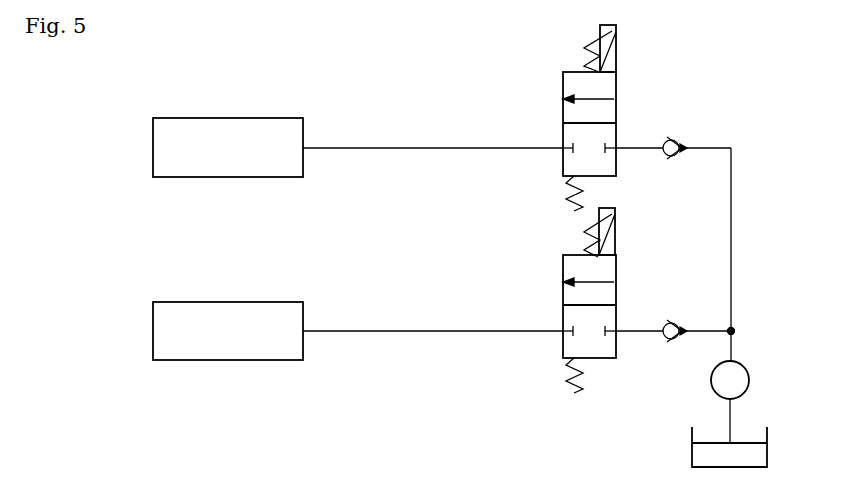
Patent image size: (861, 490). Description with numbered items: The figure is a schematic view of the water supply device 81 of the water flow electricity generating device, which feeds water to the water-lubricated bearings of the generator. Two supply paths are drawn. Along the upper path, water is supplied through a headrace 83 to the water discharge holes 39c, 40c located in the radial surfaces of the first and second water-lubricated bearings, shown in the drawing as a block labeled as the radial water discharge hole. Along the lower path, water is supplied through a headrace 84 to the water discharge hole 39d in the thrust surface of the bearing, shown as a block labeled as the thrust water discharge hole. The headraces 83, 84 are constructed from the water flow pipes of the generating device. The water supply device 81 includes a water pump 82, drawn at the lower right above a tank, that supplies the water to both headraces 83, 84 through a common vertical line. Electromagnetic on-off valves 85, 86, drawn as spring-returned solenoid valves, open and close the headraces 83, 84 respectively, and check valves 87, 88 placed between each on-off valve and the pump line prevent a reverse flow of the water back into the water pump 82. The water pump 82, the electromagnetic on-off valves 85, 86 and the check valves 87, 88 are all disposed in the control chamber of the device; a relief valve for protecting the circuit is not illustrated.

The water discharge hole 39c is at (153, 152).
The water discharge hole 40c is at (183, 147).
The water discharge hole 39d is at (153, 334).
The water supply device 81 is at (745, 116).
The water pump 82 is at (749, 380).
The headrace 83 is at (386, 148).
The headrace 84 is at (396, 331).
The electromagnetic on-off valve 85 is at (563, 90).
The electromagnetic on-off valve 86 is at (563, 272).
The check valve 87 is at (672, 138).
The check valve 88 is at (675, 321).